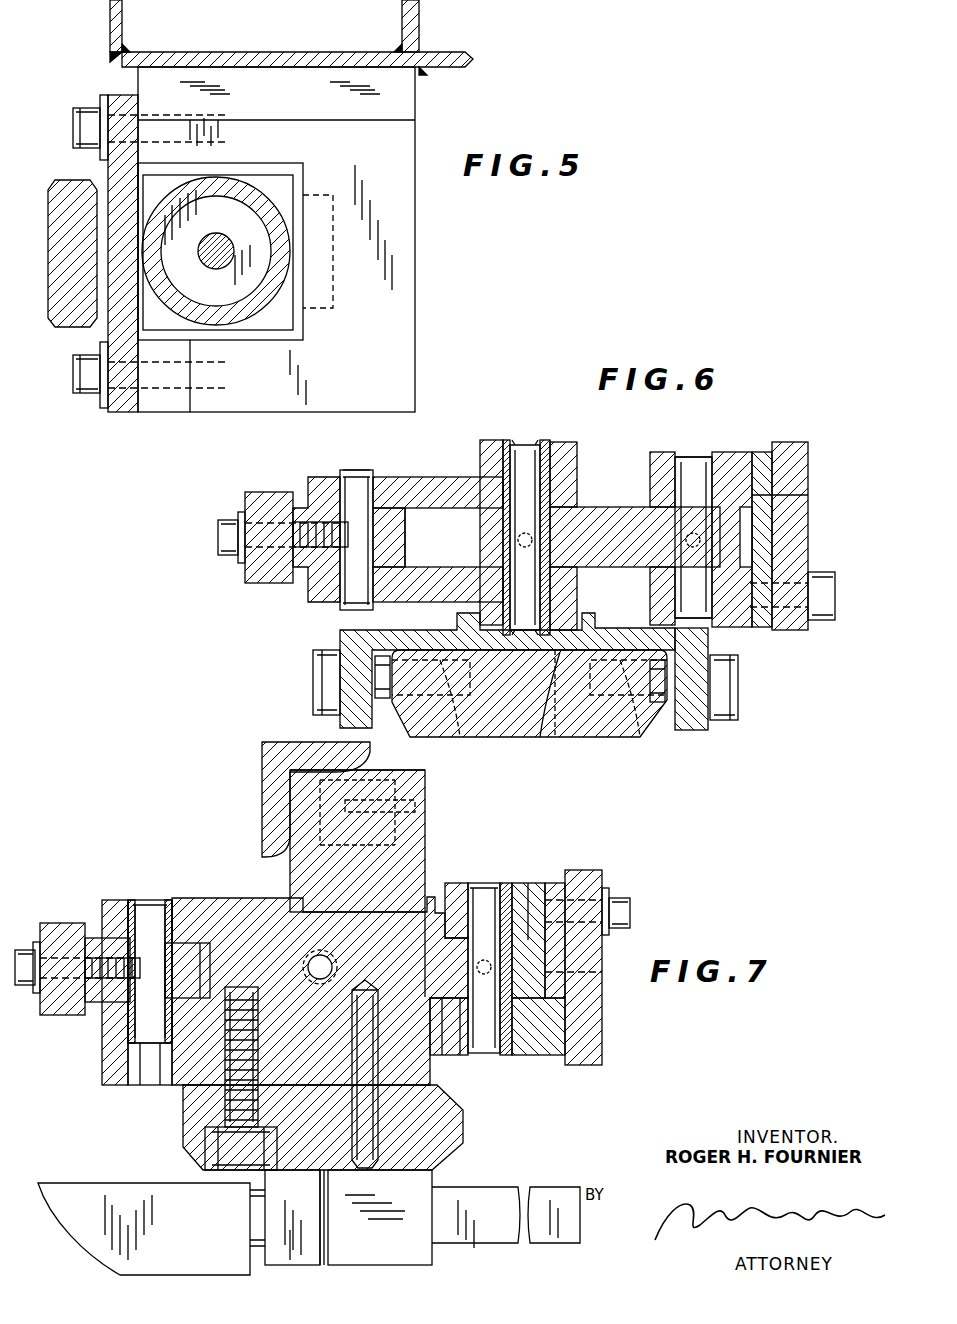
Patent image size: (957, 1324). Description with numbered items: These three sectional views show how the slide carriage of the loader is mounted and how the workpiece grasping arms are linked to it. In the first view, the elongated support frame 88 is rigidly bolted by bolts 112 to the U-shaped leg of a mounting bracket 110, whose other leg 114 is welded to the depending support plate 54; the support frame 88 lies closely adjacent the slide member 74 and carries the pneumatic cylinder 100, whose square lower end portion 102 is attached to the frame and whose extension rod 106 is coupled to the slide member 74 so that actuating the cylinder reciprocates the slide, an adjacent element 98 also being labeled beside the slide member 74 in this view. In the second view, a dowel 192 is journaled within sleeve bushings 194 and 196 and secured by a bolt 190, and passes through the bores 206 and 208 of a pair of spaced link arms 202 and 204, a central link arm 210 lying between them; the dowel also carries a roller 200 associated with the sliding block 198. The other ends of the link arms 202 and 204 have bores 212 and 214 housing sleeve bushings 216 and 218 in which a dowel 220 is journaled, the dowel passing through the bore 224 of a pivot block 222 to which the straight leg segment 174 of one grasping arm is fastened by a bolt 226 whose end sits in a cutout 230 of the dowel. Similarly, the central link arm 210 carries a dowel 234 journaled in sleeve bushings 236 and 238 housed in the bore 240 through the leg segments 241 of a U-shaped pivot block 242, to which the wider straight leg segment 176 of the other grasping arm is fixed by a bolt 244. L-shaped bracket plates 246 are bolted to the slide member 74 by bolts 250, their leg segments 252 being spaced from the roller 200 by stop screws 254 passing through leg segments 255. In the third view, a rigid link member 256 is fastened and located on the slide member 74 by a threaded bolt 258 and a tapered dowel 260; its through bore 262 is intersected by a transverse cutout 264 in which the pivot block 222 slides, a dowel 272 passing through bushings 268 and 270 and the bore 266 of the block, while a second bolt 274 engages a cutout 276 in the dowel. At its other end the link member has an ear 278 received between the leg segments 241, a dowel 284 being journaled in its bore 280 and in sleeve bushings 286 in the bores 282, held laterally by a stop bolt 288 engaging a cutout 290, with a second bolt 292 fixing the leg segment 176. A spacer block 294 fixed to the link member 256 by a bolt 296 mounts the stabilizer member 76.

In FIG. 5, the support plate 54 is at (453, 45).
In FIG. 5, the leg 114 is at (415, 97).
In FIG. 5, the mounting bracket 110 is at (415, 300).
In FIG. 5, the support frame 88 is at (125, 412).
In FIG. 5, the bolts 112 is at (88, 108).
In FIG. 5, the spacer bar 98 is at (65, 180).
In FIG. 5, the slide member 74 is at (48, 200).
In FIG. 6, the slide member 74 is at (618, 737).
In FIG. 7, the slide member 74 is at (463, 1110).
In FIG. 5, the square lower end portion 102 is at (275, 335).
In FIG. 5, the pneumatic cylinder 100 is at (258, 290).
In FIG. 5, the extension rod 106 is at (218, 236).
In FIG. 6, the straight leg segment 174 is at (245, 495).
In FIG. 7, the straight leg segment 174 is at (52, 923).
In FIG. 6, the bolt 226 is at (218, 565).
In FIG. 6, the pivot block 222 is at (305, 492).
In FIG. 7, the pivot block 222 is at (95, 938).
In FIG. 6, the sleeve bushing 216 is at (340, 485).
In FIG. 6, the dowel 220 is at (356, 471).
In FIG. 6, the through bore 212 is at (410, 478).
In FIG. 6, the through bore 224 is at (385, 523).
In FIG. 6, the through bore 214 is at (380, 572).
In FIG. 6, the link arm 204 is at (395, 602).
In FIG. 6, the cutout 230 is at (340, 600).
In FIG. 6, the leg segments 252 is at (460, 602).
In FIG. 6, the link arm 202 is at (468, 477).
In FIG. 6, the sliding block 198 is at (503, 445).
In FIG. 6, the sleeve bushing 194 is at (545, 445).
In FIG. 6, the bolt 190 is at (510, 545).
In FIG. 6, the dowel 192 is at (558, 500).
In FIG. 6, the through bore 206 is at (555, 478).
In FIG. 6, the through bore 208 is at (553, 588).
In FIG. 6, the sleeve bushing 196 is at (555, 610).
In FIG. 6, the central link arm 210 is at (640, 470).
In FIG. 6, the leg segments 241 is at (655, 452).
In FIG. 6, the sleeve bushing 238 is at (688, 458).
In FIG. 6, the dowel 234 is at (725, 460).
In FIG. 6, the straight leg segment 176 is at (808, 470).
In FIG. 7, the straight leg segment 176 is at (602, 1010).
In FIG. 6, the through bore 240 is at (808, 495).
In FIG. 6, the bolt 244 is at (820, 575).
In FIG. 6, the sleeve bushing 236 is at (708, 632).
In FIG. 6, the U-shaped pivot block 242 is at (760, 630).
In FIG. 7, the U-shaped pivot block 242 is at (562, 890).
In FIG. 6, the sleeve bushing 218 is at (340, 642).
In FIG. 6, the L-shaped bracket plates 246 is at (313, 683).
In FIG. 6, the leg segments 255 is at (375, 700).
In FIG. 6, the stop screws 254 is at (382, 700).
In FIG. 6, the bolts 250 is at (465, 700).
In FIG. 6, the roller 200 is at (555, 680).
In FIG. 7, the stabilizer member 76 is at (262, 755).
In FIG. 7, the bolt 296 is at (310, 742).
In FIG. 7, the spacer block 294 is at (425, 830).
In FIG. 7, the link member 256 is at (245, 890).
In FIG. 7, the through bore 262 is at (102, 1072).
In FIG. 7, the dowel 272 is at (135, 900).
In FIG. 7, the bushing 270 is at (172, 900).
In FIG. 7, the bushing 268 is at (140, 1085).
In FIG. 7, the through bore 266 is at (200, 943).
In FIG. 7, the transverse cutout 264 is at (182, 1000).
In FIG. 7, the second bolt 274 is at (33, 993).
In FIG. 7, the cutout 276 is at (115, 990).
In FIG. 7, the threaded bolt 258 is at (225, 1060).
In FIG. 7, the tapered dowel 260 is at (378, 1015).
In FIG. 7, the ear 278 is at (452, 883).
In FIG. 7, the dowel 284 is at (478, 883).
In FIG. 7, the sleeve bushings 286 is at (506, 883).
In FIG. 7, the through bores 282 is at (535, 920).
In FIG. 7, the second bolt 292 is at (622, 898).
In FIG. 7, the through bore 280 is at (520, 935).
In FIG. 7, the stop bolt 288 is at (602, 972).
In FIG. 7, the cutout 290 is at (448, 1055).